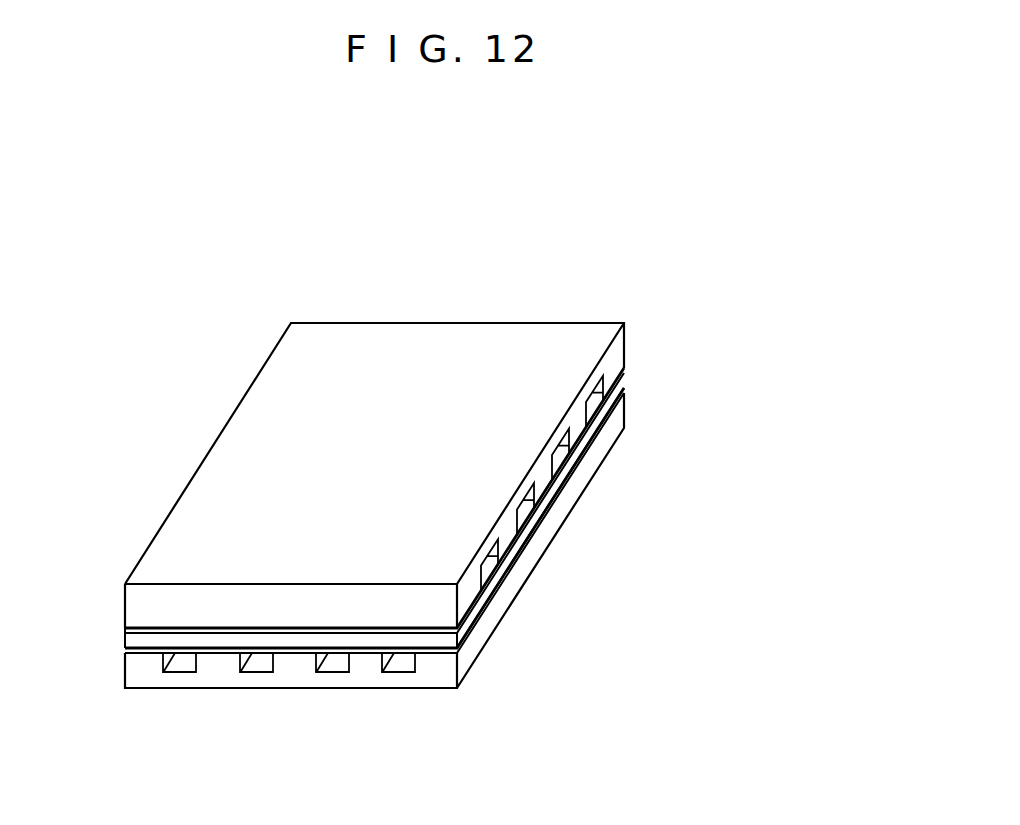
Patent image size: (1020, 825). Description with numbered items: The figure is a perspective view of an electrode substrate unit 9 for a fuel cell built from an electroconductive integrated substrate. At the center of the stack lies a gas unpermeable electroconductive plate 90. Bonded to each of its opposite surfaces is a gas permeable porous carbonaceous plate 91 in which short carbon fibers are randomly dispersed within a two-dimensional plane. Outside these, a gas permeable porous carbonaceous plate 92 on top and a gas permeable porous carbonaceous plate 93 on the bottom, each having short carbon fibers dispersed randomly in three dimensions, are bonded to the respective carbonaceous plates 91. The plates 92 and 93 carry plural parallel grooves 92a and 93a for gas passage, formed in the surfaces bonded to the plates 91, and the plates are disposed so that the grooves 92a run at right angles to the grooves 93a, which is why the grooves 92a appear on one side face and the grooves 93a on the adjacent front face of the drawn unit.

The electrode substrate unit 9 is at (743, 235).
The gas unpermeable electroconductive plate 90 is at (625, 378).
The gas permeable porous carbonaceous plate 91 is at (625, 366).
The gas permeable porous carbonaceous plate 92 is at (626, 333).
The grooves 92a is at (566, 452).
The gas permeable porous carbonaceous plate 93 is at (625, 417).
The grooves 93a is at (255, 663).